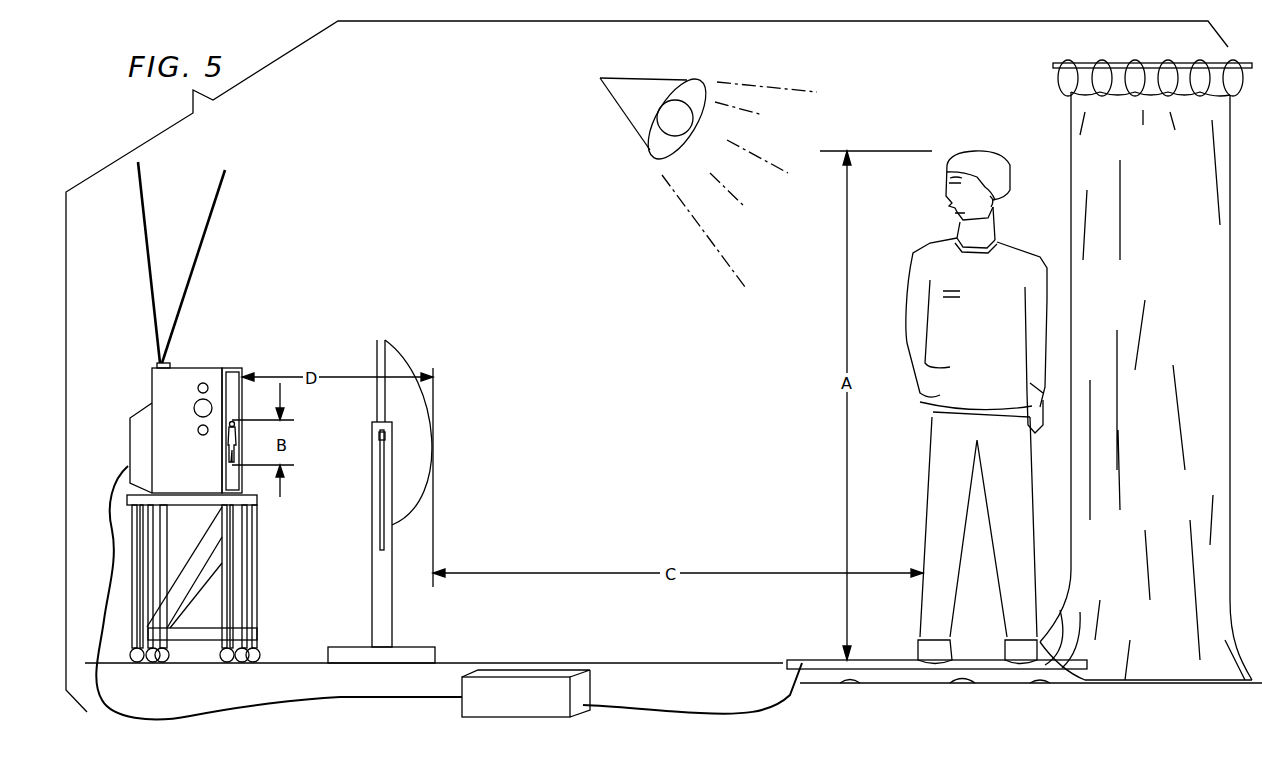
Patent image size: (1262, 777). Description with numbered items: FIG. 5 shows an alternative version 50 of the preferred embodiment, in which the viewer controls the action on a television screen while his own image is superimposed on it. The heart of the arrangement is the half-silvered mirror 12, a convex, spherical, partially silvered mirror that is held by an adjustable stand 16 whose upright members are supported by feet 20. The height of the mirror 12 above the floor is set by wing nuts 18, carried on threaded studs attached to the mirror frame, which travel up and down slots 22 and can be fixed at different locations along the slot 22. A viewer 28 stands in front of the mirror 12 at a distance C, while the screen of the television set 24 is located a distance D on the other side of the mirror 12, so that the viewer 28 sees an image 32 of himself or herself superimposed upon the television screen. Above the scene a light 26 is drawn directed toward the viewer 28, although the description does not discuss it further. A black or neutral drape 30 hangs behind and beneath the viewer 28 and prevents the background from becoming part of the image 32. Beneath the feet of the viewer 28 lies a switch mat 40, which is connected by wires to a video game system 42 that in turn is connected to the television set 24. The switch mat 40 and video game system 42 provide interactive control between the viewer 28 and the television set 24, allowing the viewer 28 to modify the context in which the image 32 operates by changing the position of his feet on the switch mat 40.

The half-silvered mirror 12 is at (410, 366).
The adjustable stand 16 is at (380, 598).
The wing nuts 18 is at (376, 440).
The feet 20 is at (415, 647).
The slots 22 is at (382, 519).
The television set 24 is at (207, 368).
The light source 26 is at (600, 78).
The viewer 28 is at (990, 155).
The drape 30 is at (1185, 63).
The image 32 is at (238, 425).
The switch mat 40 is at (790, 660).
The video game system 42 is at (545, 677).
The alternative version 50 is at (324, 186).